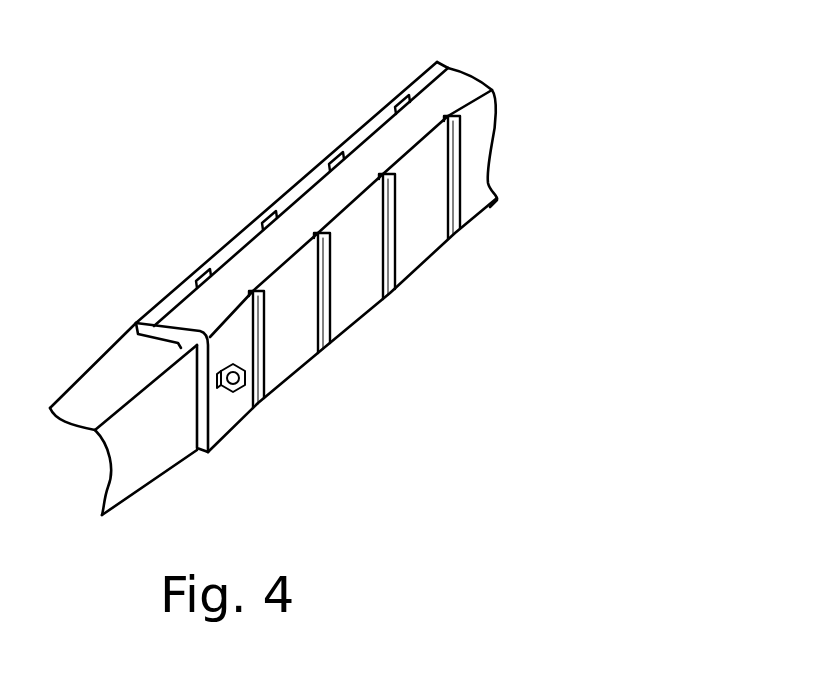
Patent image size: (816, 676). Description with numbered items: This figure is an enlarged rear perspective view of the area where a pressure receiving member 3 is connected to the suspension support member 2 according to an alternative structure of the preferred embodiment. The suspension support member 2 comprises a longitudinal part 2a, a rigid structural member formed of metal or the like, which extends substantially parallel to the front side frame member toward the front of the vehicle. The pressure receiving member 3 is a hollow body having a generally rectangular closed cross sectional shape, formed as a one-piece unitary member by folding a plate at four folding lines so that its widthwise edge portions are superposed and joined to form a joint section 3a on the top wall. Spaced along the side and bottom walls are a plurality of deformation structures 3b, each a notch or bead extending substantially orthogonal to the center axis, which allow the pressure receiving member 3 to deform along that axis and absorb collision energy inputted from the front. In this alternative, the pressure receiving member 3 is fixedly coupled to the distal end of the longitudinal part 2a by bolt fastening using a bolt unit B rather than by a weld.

The suspension support member 2 is at (132, 415).
The longitudinal part 2a is at (135, 462).
The pressure receiving member 3 is at (170, 292).
The joint section 3a is at (402, 92).
The deformation structure 3b is at (322, 163).
The bolt unit B is at (227, 392).